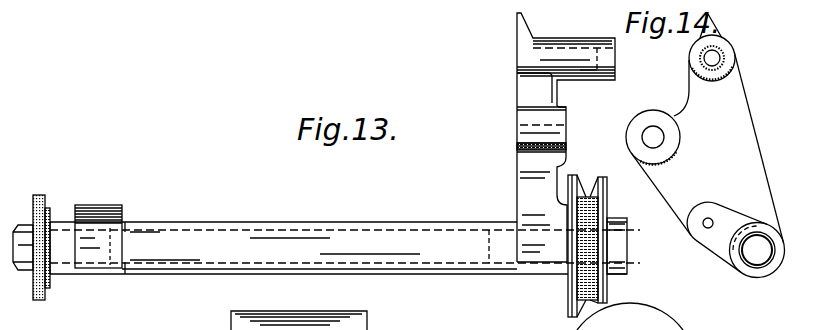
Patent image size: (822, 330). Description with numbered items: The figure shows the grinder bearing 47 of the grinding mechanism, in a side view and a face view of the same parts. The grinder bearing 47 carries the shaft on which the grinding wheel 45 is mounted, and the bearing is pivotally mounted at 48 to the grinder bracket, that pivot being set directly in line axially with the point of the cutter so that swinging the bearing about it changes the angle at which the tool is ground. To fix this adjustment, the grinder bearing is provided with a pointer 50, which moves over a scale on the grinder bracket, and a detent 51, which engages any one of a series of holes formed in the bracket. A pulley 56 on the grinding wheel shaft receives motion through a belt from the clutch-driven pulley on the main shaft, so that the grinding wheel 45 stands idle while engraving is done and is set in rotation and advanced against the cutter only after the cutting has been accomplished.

In FIG. 13, the grinding wheel 45 is at (45, 293).
In FIG. 13, the grinder bearing 47 is at (435, 268).
In FIG. 14, the grinder bearing 47 is at (762, 277).
In FIG. 13, the pivotal mounting 48 is at (112, 205).
In FIG. 14, the pivotal mounting 48 is at (706, 227).
In FIG. 13, the pointer 50 is at (517, 23).
In FIG. 14, the pointer 50 is at (715, 25).
In FIG. 13, the detent 51 is at (573, 70).
In FIG. 14, the detent 51 is at (717, 58).
In FIG. 13, the pulley 56 is at (598, 208).